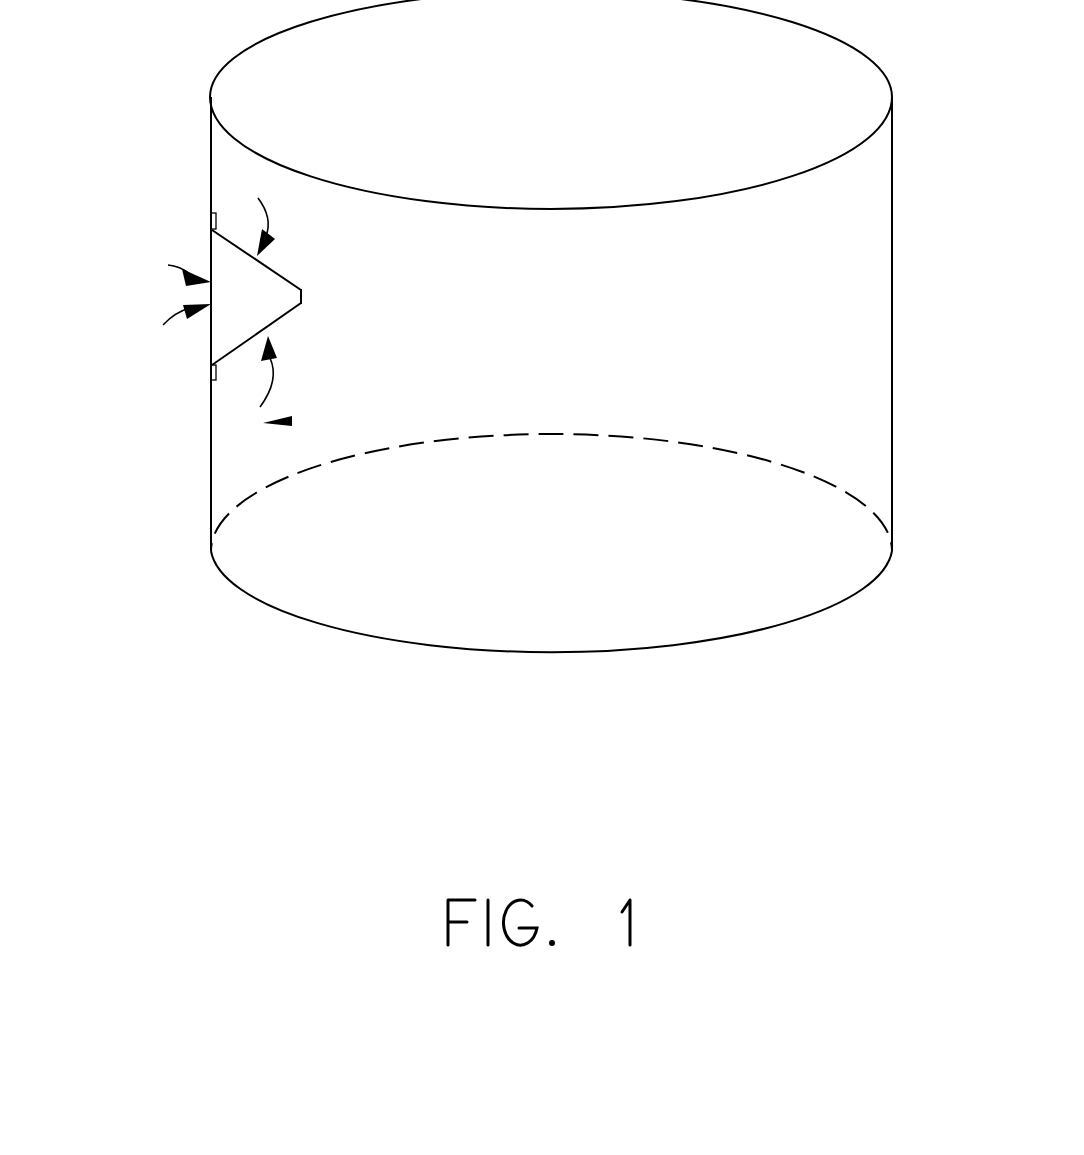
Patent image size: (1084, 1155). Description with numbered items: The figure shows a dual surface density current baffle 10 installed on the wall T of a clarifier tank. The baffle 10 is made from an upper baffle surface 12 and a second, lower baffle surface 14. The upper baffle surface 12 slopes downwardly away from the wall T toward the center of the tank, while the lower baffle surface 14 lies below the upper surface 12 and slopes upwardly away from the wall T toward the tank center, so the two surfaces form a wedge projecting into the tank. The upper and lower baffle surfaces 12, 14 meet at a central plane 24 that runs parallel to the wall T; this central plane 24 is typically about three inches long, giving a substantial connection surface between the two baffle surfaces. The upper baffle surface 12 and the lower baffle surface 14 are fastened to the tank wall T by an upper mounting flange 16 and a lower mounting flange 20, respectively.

The dual surface density current baffle 10 is at (301, 310).
The upper baffle surface 12 is at (277, 268).
The lower baffle surface 14 is at (275, 323).
The upper mounting flange 16 is at (212, 222).
The lower mounting flange 20 is at (212, 378).
The central plane 24 is at (302, 297).
The tank wall T is at (211, 445).